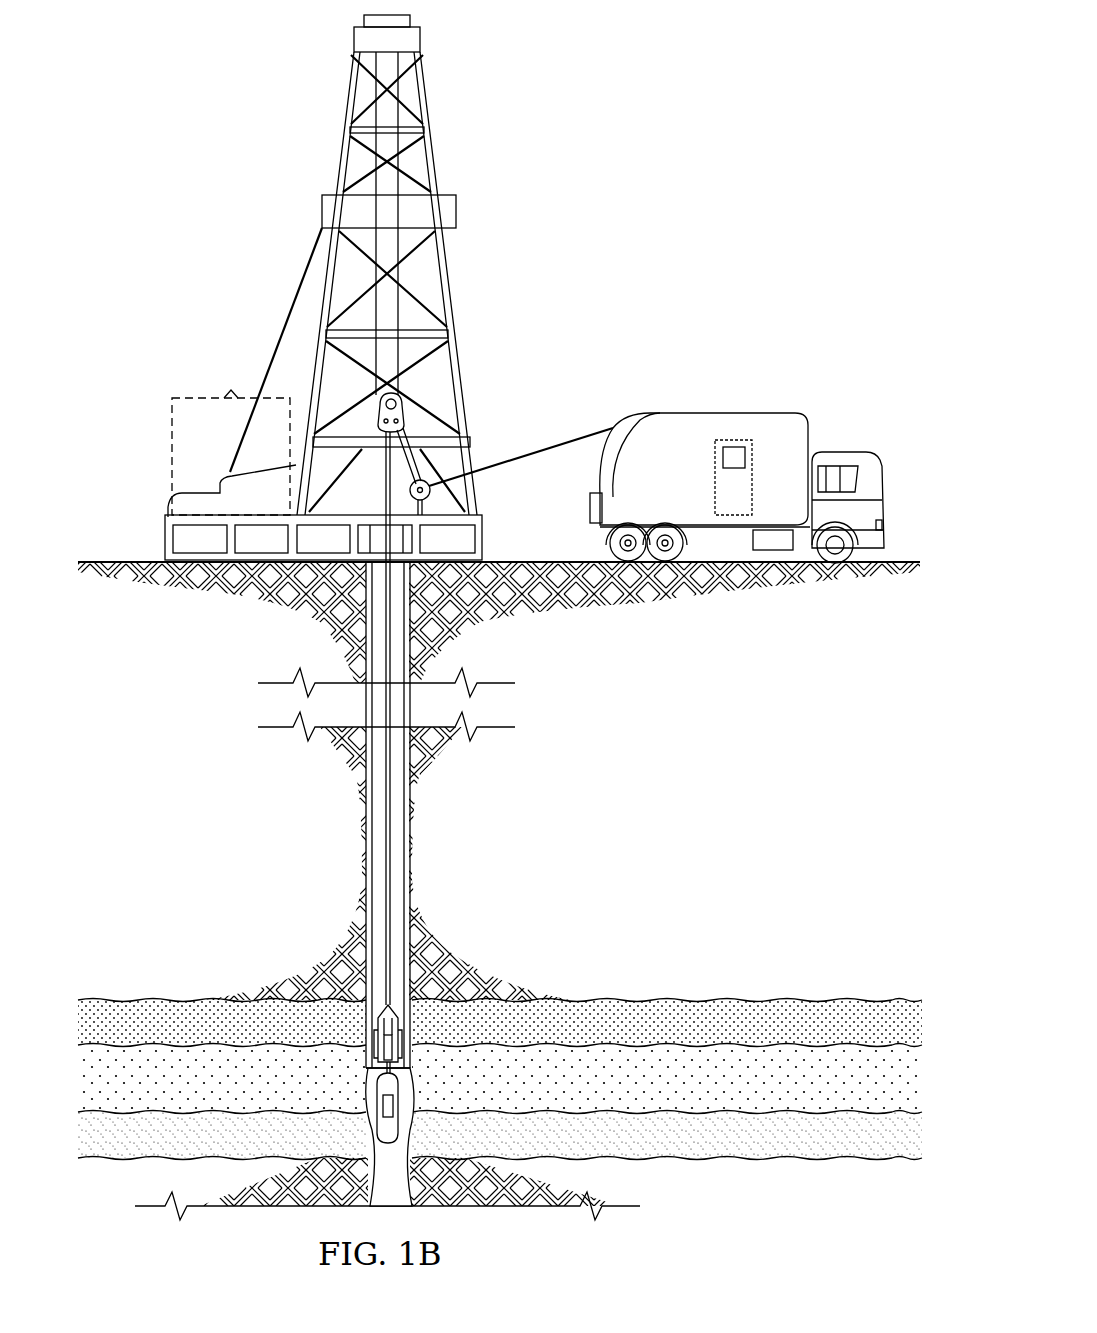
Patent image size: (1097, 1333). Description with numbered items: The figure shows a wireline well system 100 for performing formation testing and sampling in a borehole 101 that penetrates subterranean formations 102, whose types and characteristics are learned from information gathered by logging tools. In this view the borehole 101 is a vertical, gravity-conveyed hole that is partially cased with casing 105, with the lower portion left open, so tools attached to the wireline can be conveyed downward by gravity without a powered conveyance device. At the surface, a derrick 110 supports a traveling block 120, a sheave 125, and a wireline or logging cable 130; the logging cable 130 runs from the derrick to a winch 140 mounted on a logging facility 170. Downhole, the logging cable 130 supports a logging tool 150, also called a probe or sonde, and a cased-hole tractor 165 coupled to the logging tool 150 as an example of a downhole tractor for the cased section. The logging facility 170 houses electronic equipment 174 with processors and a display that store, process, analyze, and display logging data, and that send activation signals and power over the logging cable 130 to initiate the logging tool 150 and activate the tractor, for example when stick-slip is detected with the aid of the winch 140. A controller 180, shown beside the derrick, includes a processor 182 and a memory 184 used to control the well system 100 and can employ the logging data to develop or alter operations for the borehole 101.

The well system 100 is at (228, 57).
The borehole 101 is at (366, 826).
The subterranean formations 102 is at (500, 891).
The casing 105 is at (410, 790).
The derrick 110 is at (482, 515).
The traveling block 120 is at (398, 395).
The sheave 125 is at (428, 484).
The logging cable 130 is at (585, 436).
The winch 140 is at (632, 412).
The logging tool 150 is at (378, 1100).
The cased-hole tractor 165 is at (378, 1045).
The logging facility 170 is at (685, 413).
The electronic equipment 174 is at (735, 447).
The controller 180 is at (245, 372).
The processor 182 is at (192, 546).
The memory 184 is at (260, 548).